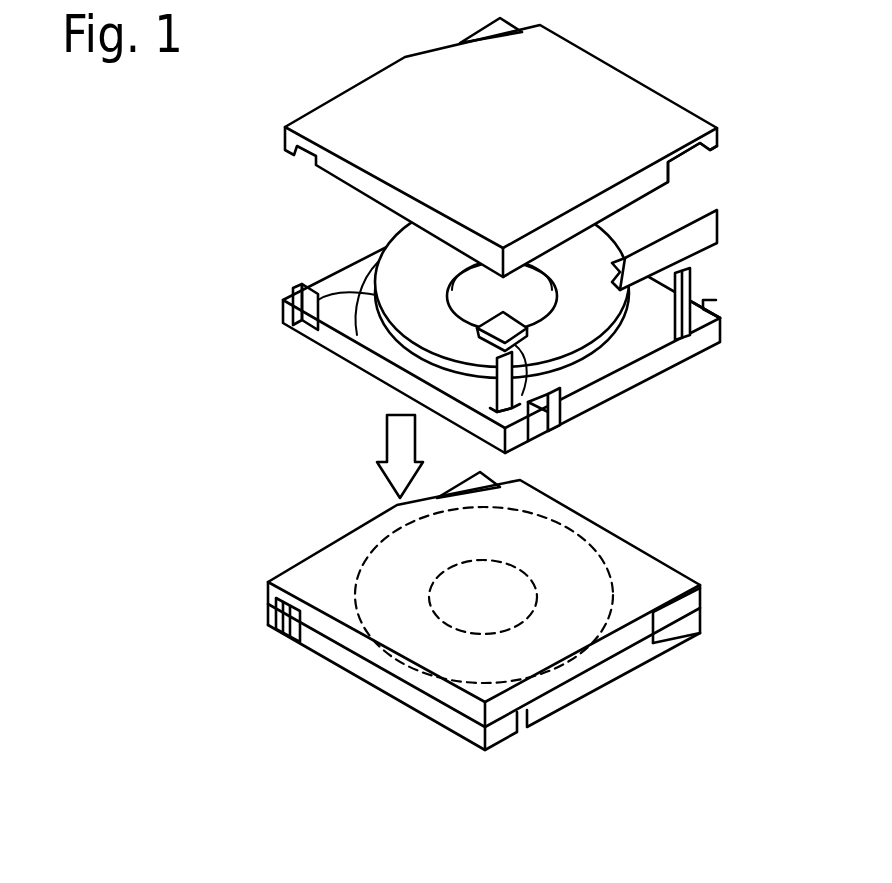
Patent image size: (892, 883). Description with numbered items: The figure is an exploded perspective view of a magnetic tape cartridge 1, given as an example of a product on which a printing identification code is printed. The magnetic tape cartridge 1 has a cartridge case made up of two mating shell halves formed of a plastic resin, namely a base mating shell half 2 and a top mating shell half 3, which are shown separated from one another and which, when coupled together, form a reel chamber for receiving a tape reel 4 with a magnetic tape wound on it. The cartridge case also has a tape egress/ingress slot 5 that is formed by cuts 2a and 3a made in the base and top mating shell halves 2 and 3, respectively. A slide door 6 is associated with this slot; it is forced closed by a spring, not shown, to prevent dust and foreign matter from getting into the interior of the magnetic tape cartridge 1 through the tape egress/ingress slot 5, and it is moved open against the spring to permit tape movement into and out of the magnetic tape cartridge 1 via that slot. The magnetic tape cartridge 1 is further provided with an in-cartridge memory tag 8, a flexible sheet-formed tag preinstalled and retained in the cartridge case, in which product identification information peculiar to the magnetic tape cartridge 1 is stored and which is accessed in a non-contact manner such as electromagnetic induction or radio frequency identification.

The magnetic tape cartridge 1 is at (268, 528).
The base mating shell half 2 is at (630, 387).
The cut 2a is at (700, 340).
The top mating shell half 3 is at (632, 72).
The cut 3a is at (680, 162).
The tape reel 4 is at (410, 265).
The tape egress/ingress slot 5 is at (663, 637).
The slide door 6 is at (722, 222).
The in-cartridge memory tag 8 is at (570, 383).